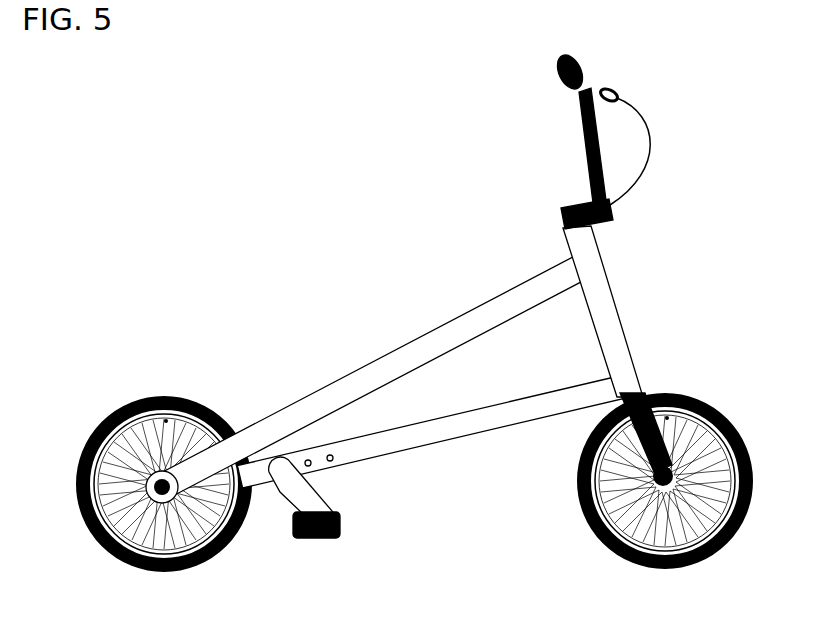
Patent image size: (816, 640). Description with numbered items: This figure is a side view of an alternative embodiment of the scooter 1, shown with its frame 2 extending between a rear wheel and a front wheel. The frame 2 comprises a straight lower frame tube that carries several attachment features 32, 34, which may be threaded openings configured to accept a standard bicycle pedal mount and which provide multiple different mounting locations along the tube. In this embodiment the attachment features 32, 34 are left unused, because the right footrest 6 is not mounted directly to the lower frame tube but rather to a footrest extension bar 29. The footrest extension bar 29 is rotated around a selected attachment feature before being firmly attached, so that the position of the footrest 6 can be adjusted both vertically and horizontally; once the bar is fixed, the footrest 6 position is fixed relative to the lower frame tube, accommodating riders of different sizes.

The bicycle 1 is at (414, 322).
The frame 2 is at (395, 354).
The right footrest 6 is at (325, 538).
The footrest extension bar 29 is at (298, 495).
The attachment feature 32 is at (334, 459).
The attachment feature 34 is at (311, 466).